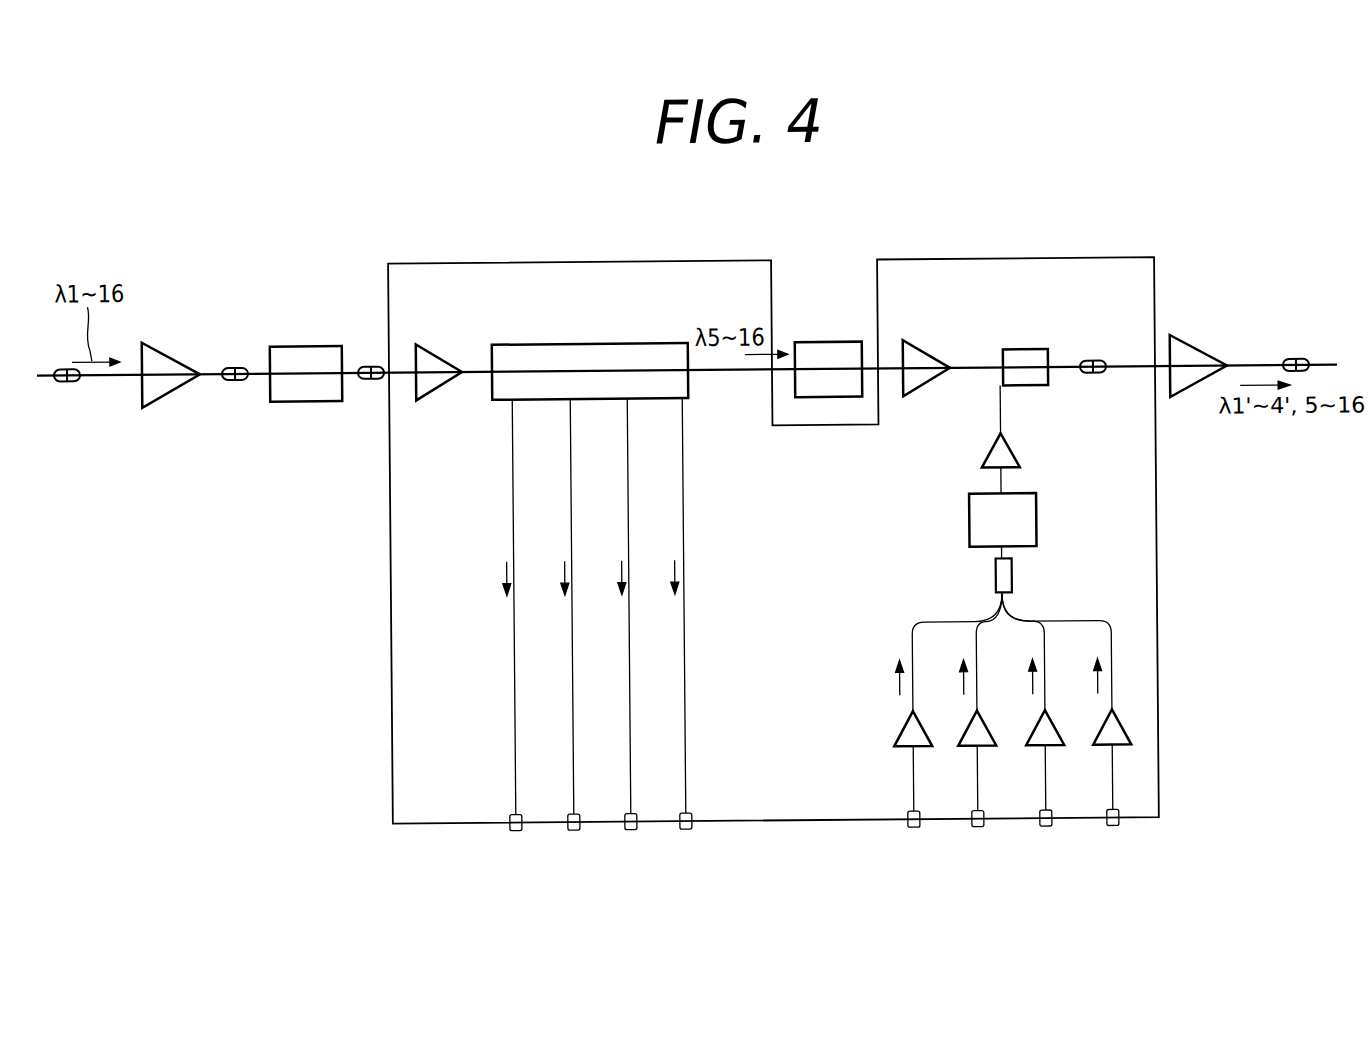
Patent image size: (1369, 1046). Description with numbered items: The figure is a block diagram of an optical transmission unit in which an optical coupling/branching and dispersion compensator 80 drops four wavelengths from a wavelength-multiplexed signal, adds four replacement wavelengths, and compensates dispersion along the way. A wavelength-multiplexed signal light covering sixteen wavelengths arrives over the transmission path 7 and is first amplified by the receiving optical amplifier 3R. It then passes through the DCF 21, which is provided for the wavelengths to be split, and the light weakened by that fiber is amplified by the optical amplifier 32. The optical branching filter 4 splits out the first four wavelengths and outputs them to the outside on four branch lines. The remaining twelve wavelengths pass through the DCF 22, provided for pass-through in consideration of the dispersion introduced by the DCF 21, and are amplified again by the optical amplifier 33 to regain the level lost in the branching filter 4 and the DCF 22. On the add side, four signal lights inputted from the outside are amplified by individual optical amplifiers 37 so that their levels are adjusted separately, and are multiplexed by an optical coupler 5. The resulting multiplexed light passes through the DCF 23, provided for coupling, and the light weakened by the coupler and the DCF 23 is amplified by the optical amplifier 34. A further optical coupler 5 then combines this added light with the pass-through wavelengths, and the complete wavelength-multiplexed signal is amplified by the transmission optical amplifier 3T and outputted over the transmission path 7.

The transmission path 7 is at (42, 371).
The receiving optical amplifier 3R is at (172, 346).
The DCF 21 is at (320, 343).
The optical amplifier 32 is at (440, 346).
The optical branching filter 4 is at (645, 343).
The DCF 22 is at (845, 343).
The optical amplifier 33 is at (928, 346).
The optical coupler 5 is at (1038, 352).
The transmission optical amplifier 3T is at (1202, 346).
The optical amplifier 34 is at (1015, 452).
The DCF 23 is at (1035, 512).
The optical amplifiers 37 is at (918, 749).
The optical coupling/branching & dispersion compensator 80 is at (1156, 640).